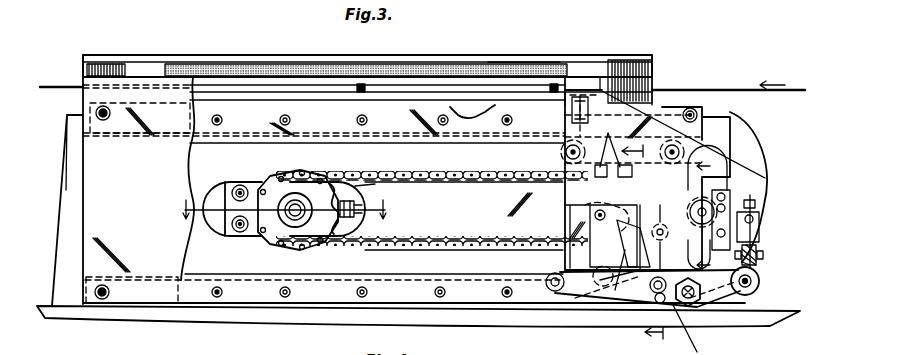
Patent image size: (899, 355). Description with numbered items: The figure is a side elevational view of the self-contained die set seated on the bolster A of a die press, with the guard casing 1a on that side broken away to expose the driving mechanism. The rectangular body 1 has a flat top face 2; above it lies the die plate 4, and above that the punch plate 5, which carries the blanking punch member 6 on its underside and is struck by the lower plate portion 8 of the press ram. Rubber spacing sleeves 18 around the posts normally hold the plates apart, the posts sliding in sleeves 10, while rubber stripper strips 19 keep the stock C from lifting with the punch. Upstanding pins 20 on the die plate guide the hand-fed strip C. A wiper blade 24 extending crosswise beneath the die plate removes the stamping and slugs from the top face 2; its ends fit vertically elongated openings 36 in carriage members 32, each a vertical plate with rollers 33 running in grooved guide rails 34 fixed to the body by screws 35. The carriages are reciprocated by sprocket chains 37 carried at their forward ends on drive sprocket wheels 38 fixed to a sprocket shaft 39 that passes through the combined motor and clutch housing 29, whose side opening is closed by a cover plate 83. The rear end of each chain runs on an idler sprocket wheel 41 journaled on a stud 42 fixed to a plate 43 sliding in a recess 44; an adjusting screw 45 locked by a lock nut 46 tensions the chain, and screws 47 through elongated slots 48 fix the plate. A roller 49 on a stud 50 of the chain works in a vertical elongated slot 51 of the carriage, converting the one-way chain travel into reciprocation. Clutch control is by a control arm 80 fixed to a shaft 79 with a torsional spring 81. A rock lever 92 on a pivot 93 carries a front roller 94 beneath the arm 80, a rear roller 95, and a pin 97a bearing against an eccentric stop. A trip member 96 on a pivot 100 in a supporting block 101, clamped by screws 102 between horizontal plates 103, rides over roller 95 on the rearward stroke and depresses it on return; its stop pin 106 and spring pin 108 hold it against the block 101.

The body 1 is at (78, 232).
The guard casing 1a is at (105, 188).
The flat top face 2 is at (472, 96).
The die plate 4 is at (282, 95).
The punch plate 5 is at (248, 56).
The blanking punch member 6 is at (707, 214).
The lower plate portion 8 is at (648, 244).
The sleeve 10 is at (652, 84).
The rubber spacing sleeve 18 is at (112, 64).
The rubber stripper strip 19 is at (490, 62).
The upstanding pin 20 is at (361, 84).
The wiper blade 24 is at (581, 97).
The combined motor and clutch housing 29 is at (745, 185).
The carriage member 32 is at (662, 122).
The roller 33 is at (566, 154).
The guide rail 34 is at (412, 108).
The screw 35 is at (223, 120).
The horizontal opening 36 is at (564, 123).
The sprocket chain 37 is at (465, 182).
The drive sprocket wheel 38 is at (630, 214).
The sprocket shaft 39 is at (633, 202).
The idler sprocket wheel 41 is at (322, 195).
The horizontal stud 42 is at (298, 200).
The plate 43 is at (345, 229).
The recess 44 is at (217, 188).
The adjusting screw 45 is at (364, 180).
The lock nut 46 is at (347, 202).
The screw 47 is at (241, 185).
The elongated slot 48 is at (267, 186).
The roller 49 is at (759, 238).
The horizontal stud 50 is at (716, 212).
The vertical elongated slot 51 is at (724, 200).
The horizontal shaft 79 is at (757, 252).
The control arm 80 is at (759, 226).
The torsional spring 81 is at (763, 258).
The cover plate 83 is at (755, 212).
The rock lever 92 is at (587, 290).
The horizontal pivot 93 is at (690, 304).
The roller 94 is at (760, 284).
The roller 95 is at (553, 292).
The trip member 96 is at (653, 297).
The horizontal pin 97a is at (660, 303).
The horizontal pivot 100 is at (617, 280).
The supporting block 101 is at (583, 223).
The vertical screw 102 is at (610, 133).
The horizontal plate 103 is at (595, 220).
The stop pin 106 is at (660, 237).
The pin 108 is at (568, 264).
The bolster A is at (733, 320).
The stock C is at (58, 87).